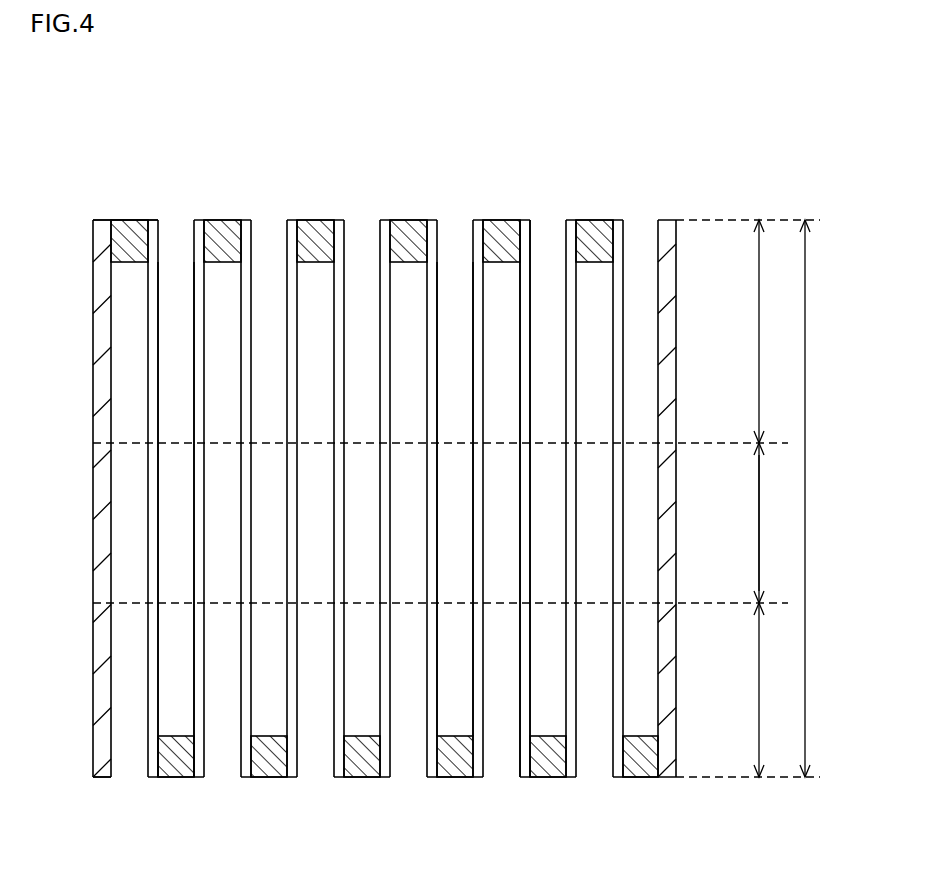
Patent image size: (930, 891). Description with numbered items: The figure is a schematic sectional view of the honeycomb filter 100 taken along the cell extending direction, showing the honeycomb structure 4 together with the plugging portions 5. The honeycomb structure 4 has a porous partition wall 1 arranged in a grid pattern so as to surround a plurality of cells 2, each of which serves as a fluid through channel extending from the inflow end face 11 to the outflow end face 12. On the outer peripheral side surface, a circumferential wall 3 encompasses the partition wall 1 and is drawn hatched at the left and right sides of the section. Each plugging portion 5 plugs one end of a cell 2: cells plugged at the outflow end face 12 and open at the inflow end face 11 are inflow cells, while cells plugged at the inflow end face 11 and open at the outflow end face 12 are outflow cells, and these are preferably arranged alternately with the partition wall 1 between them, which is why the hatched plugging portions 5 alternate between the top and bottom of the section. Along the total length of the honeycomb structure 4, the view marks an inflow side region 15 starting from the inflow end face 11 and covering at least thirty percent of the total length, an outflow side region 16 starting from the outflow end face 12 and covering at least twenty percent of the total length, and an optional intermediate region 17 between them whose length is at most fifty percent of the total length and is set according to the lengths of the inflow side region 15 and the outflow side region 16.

The honeycomb filter 100 is at (706, 66).
The partition wall 1 is at (527, 243).
The cell 2 is at (453, 297).
The circumferential wall 3 is at (106, 285).
The honeycomb structure 4 is at (683, 203).
The plugging portion 5 is at (132, 240).
The inflow end face 11 is at (118, 198).
The outflow end face 12 is at (120, 790).
The inflow side region 15 is at (133, 418).
The outflow side region 16 is at (133, 705).
The intermediate region 17 is at (133, 548).